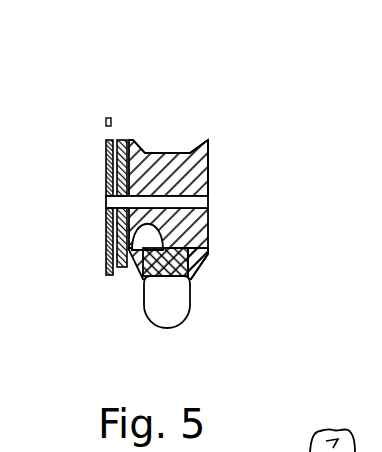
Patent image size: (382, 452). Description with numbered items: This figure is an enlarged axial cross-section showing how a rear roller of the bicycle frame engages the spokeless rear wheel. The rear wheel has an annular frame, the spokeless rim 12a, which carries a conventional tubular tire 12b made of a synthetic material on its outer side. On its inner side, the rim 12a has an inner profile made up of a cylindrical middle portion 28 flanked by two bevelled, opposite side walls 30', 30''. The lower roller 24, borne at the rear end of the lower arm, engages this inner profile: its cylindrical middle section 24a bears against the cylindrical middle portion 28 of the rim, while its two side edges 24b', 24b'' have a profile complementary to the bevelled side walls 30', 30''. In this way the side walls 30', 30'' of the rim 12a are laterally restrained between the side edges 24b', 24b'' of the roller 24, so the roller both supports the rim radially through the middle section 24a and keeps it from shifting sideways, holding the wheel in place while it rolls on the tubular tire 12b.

The lower roller 24 is at (204, 184).
The cylindrical middle section of lower roller 24a is at (172, 153).
The side edge of lower roller 24b' is at (73, 154).
The side edge of lower roller 24b'' is at (263, 151).
The cylindrical middle portion 28 is at (110, 228).
The bevelled side wall 30' is at (56, 241).
The bevelled side wall 30'' is at (255, 237).
The spokeless rim 12a is at (195, 279).
The tubular tire 12b is at (165, 328).